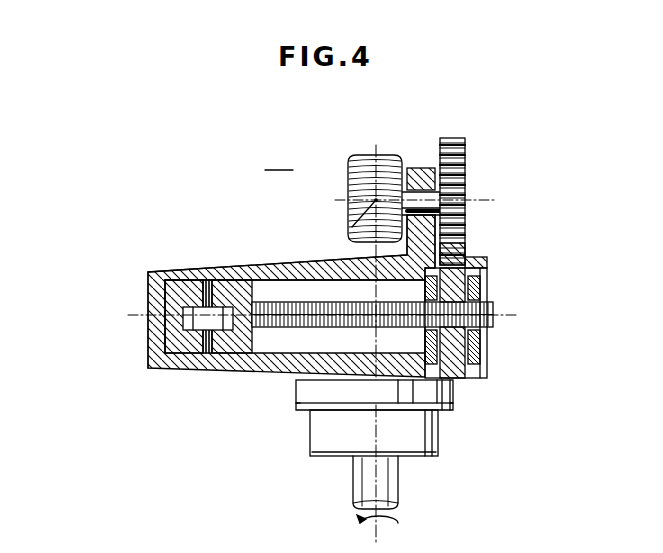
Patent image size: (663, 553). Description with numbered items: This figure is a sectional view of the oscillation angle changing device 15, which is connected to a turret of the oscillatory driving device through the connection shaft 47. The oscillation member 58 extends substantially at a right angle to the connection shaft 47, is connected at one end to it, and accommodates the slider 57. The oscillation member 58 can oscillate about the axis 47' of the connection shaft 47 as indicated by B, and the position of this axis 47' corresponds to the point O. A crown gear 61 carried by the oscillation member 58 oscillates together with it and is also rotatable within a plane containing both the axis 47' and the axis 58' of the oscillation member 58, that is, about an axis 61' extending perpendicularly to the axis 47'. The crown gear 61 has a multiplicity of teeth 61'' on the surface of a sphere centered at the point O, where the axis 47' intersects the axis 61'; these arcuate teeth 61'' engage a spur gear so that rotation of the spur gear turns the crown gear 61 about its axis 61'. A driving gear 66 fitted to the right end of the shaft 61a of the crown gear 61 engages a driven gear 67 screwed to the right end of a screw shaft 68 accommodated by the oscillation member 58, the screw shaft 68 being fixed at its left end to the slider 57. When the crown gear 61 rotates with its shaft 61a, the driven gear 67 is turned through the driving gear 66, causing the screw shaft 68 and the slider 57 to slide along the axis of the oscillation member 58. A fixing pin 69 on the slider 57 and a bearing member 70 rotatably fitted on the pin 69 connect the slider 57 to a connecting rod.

The oscillation angle changing device 15 is at (270, 417).
The connection shaft 47 is at (407, 482).
The axis of the connection shaft 47' is at (406, 325).
The slider 57 is at (178, 273).
The oscillation member 58 is at (286, 243).
The axis of the oscillation member 58' is at (126, 318).
The crown gear 61 is at (352, 178).
The axis of rotation of the crown gear 61' is at (441, 182).
The teeth of the crown gear 61'' is at (358, 173).
The shaft of the crown gear 61a is at (436, 228).
The driving gear 66 is at (467, 155).
The driven gear 67 is at (458, 336).
The screw shaft 68 is at (268, 335).
The fixing pin 69 is at (213, 278).
The bearing member 70 is at (183, 333).
The point O is at (352, 225).
The oscillation direction B is at (398, 521).